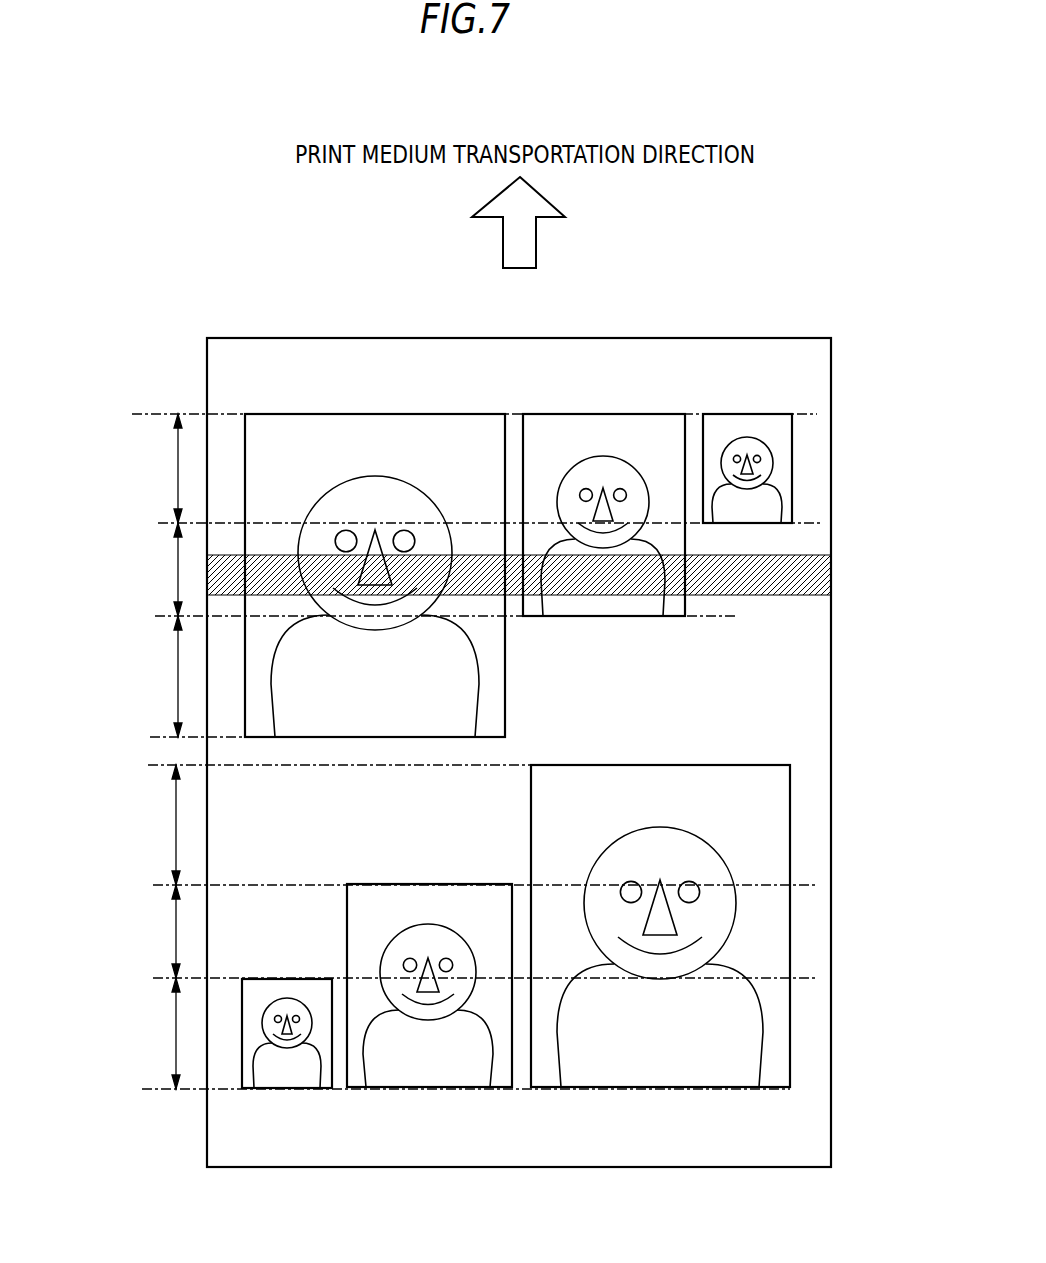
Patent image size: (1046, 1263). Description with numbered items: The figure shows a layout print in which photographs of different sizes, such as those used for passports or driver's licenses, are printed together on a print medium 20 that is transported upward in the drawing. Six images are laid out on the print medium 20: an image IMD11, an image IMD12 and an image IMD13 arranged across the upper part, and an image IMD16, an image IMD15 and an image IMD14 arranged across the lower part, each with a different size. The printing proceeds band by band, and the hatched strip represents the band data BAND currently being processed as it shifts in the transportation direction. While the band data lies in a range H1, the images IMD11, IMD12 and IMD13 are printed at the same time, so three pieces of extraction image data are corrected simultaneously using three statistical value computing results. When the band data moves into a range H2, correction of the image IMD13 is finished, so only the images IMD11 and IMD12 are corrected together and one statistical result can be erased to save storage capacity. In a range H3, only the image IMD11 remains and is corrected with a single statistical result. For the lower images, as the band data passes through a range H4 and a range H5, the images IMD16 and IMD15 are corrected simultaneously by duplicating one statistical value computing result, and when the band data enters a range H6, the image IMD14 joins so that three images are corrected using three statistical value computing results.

The print medium 20 is at (730, 337).
The image IMD11 is at (371, 428).
The image IMD12 is at (605, 428).
The image IMD13 is at (745, 427).
The image IMD14 is at (278, 985).
The image IMD15 is at (415, 893).
The image IMD16 is at (652, 783).
The range H1 is at (159, 473).
The range H2 is at (159, 571).
The range H3 is at (159, 679).
The range H4 is at (157, 823).
The range H5 is at (157, 934).
The range H6 is at (157, 1039).
The band data BAND is at (204, 554).